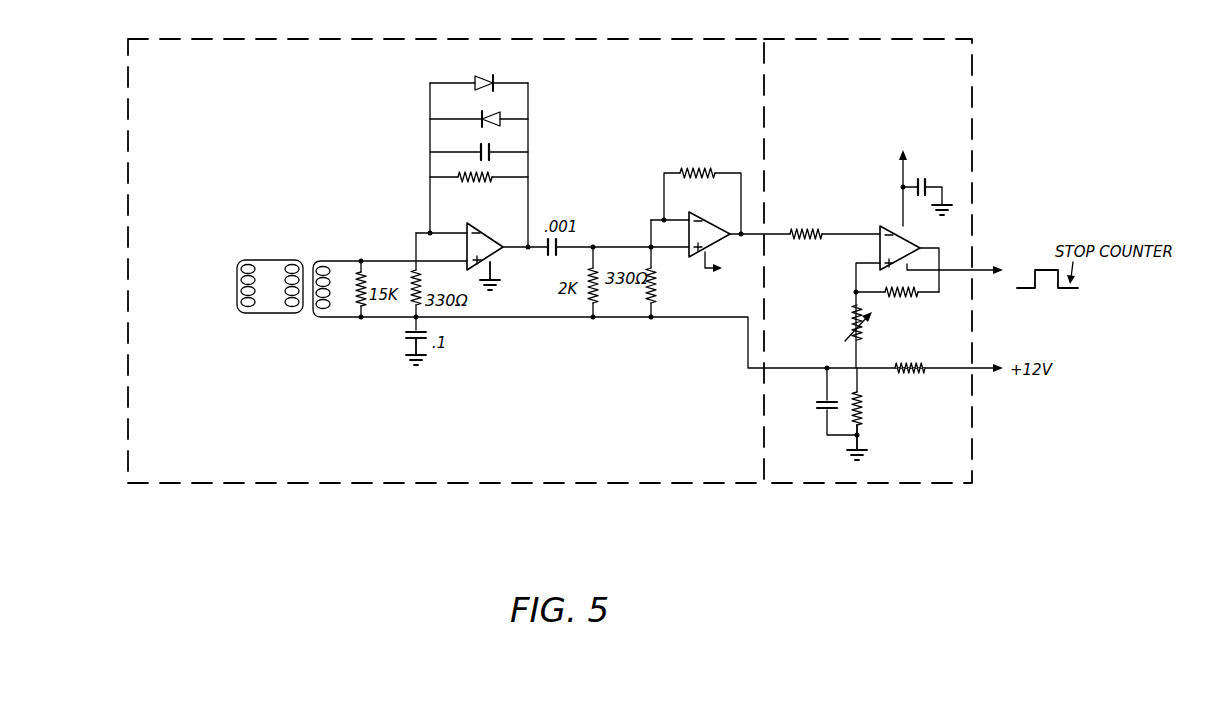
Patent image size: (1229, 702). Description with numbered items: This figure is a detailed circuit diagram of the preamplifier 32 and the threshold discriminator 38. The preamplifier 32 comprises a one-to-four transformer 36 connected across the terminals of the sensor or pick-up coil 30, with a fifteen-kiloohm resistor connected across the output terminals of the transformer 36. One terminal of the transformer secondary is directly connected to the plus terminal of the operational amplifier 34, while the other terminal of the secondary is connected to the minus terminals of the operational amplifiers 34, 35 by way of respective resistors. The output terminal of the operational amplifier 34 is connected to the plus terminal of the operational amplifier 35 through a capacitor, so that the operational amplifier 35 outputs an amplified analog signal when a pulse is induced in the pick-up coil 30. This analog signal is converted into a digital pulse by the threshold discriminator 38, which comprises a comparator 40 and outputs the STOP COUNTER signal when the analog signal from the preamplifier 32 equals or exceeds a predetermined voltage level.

The pick-up coil 30 is at (243, 313).
The preamplifier 32 is at (270, 39).
The operational amplifier 34 is at (478, 268).
The operational amplifier 35 is at (706, 212).
The 1:4 transformer 36 is at (311, 324).
The threshold discriminator 38 is at (878, 39).
The comparator 40 is at (885, 222).